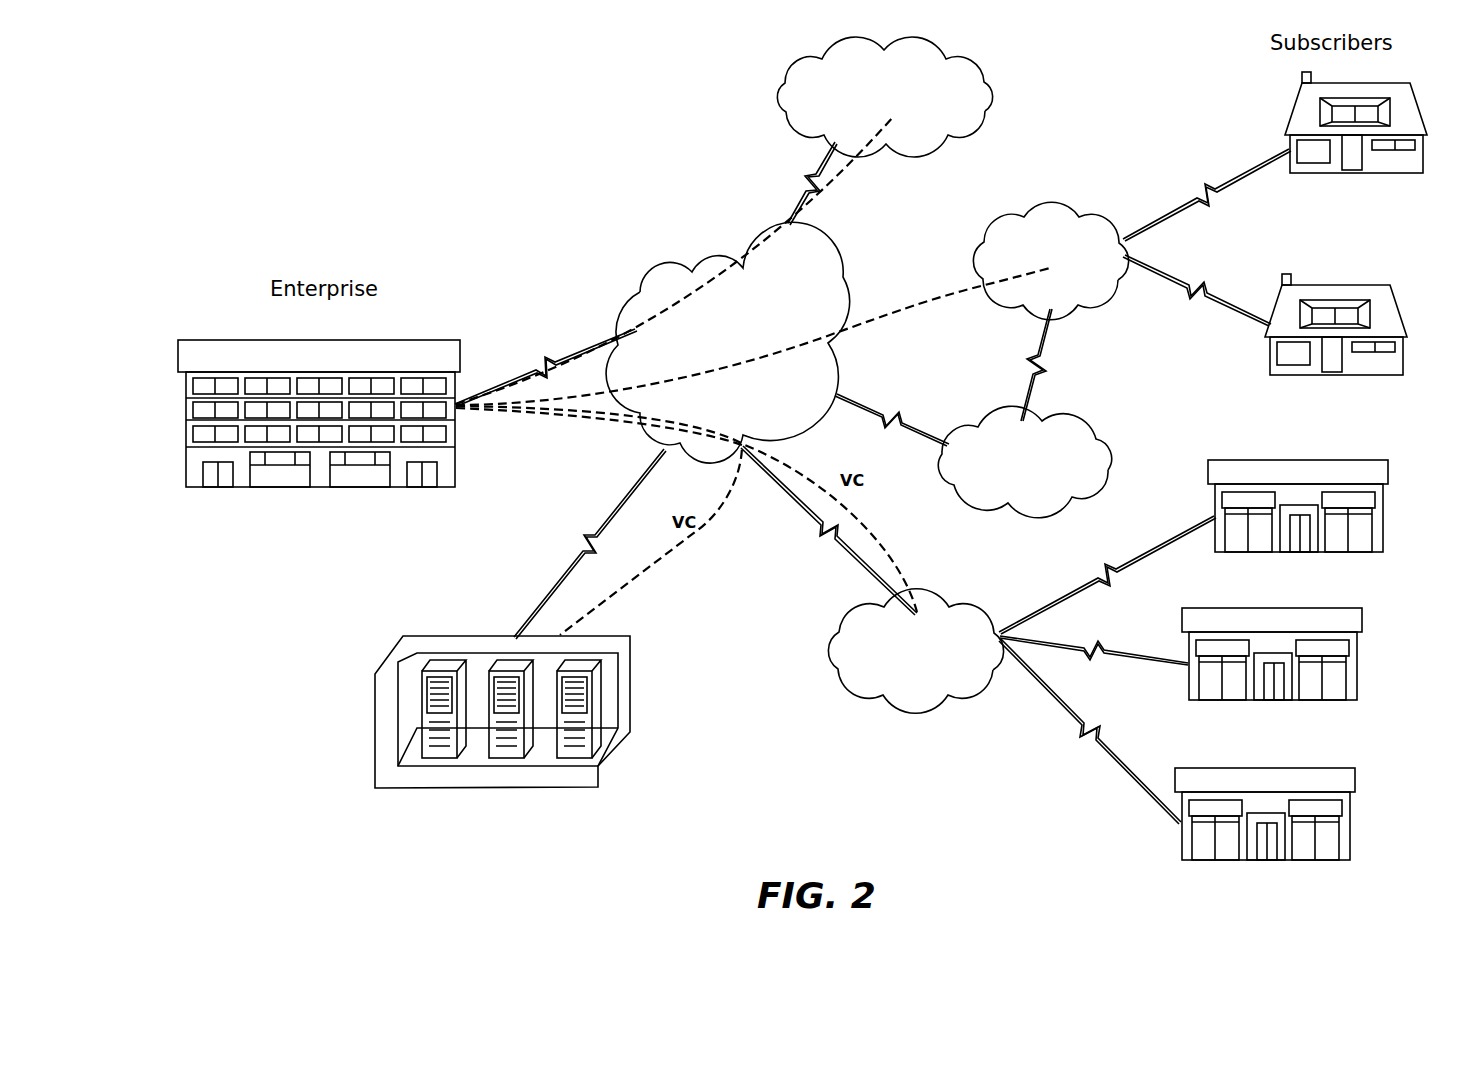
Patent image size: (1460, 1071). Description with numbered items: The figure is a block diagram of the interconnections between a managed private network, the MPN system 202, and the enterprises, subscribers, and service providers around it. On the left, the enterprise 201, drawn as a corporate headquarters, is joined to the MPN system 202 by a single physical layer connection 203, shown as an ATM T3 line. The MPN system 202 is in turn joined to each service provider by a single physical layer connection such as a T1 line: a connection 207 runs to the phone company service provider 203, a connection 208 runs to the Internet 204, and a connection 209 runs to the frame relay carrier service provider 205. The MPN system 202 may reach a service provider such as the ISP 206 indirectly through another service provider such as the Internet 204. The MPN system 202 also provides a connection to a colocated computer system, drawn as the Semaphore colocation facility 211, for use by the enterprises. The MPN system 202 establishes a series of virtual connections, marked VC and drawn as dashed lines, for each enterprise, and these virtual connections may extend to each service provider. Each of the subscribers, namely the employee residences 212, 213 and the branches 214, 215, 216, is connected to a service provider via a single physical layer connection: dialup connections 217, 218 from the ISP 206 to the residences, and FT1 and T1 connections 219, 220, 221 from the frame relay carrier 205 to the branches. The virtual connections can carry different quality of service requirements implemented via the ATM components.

The enterprise 201 is at (296, 426).
The MPN system 202 is at (751, 342).
The single physical layer connection 203 is at (724, 238).
The Internet 204 is at (1026, 457).
The service provider 205 is at (915, 648).
The ISP 206 is at (1050, 261).
The single physical layer connection 207 is at (798, 183).
The single physical layer connection 208 is at (892, 420).
The single physical layer connection 209 is at (829, 530).
The Semaphore colocation facility 211 is at (486, 733).
The subscriber 212 is at (980, 355).
The subscriber 213 is at (1339, 336).
The subscriber 214 is at (1316, 519).
The subscriber 215 is at (1296, 668).
The subscriber 216 is at (1283, 828).
The single physical layer connection 217 is at (1207, 195).
The single physical layer connection 218 is at (1197, 290).
The single physical layer connection 219 is at (1107, 575).
The single physical layer connection 220 is at (1094, 658).
The single physical layer connection 221 is at (1090, 731).